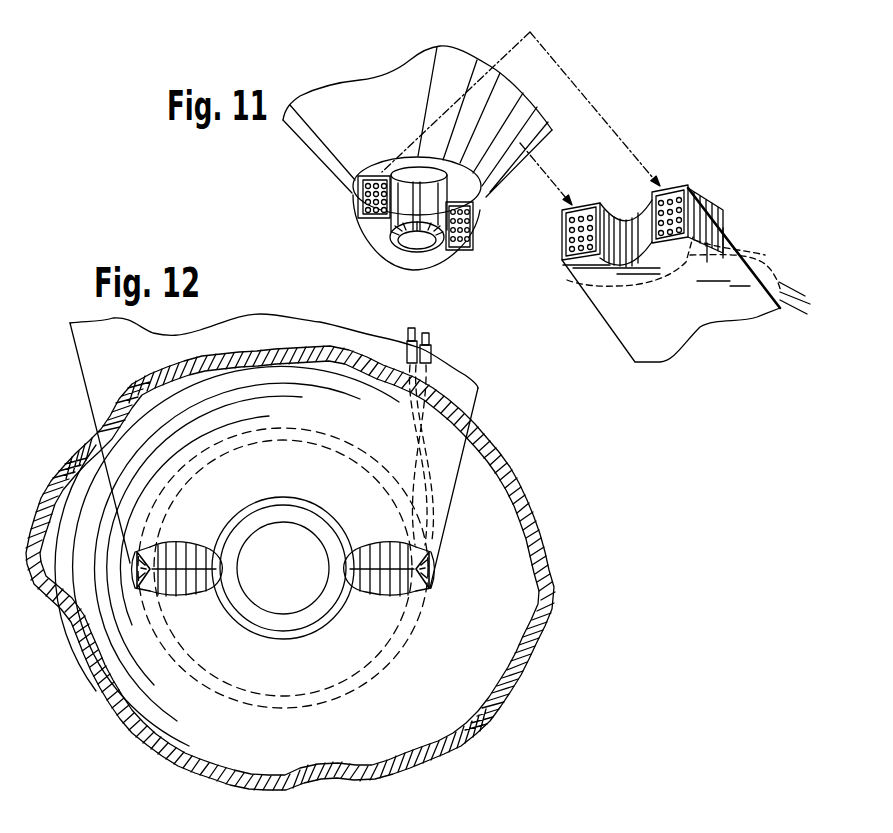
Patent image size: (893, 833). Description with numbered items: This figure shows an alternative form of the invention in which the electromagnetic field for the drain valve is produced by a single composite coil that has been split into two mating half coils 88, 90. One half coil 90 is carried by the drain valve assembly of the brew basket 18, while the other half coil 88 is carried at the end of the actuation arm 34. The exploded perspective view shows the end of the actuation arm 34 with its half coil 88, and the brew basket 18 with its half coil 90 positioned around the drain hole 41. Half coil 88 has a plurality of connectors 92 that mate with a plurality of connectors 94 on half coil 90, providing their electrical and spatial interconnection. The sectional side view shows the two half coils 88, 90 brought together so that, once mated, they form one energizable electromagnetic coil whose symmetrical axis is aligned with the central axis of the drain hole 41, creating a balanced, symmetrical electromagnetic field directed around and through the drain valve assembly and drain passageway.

In FIG. 11, the brew basket 18 is at (313, 143).
In FIG. 12, the brew basket 18 is at (477, 652).
In FIG. 11, the half coil 90 is at (388, 254).
In FIG. 12, the half coil 90 is at (173, 600).
In FIG. 11, the connectors 94 is at (358, 208).
In FIG. 11, the half coil 88 is at (567, 280).
In FIG. 12, the half coil 88 is at (400, 590).
In FIG. 11, the connectors 92 is at (668, 195).
In FIG. 11, the actuation arm 34 is at (715, 312).
In FIG. 12, the drain hole 41 is at (303, 590).